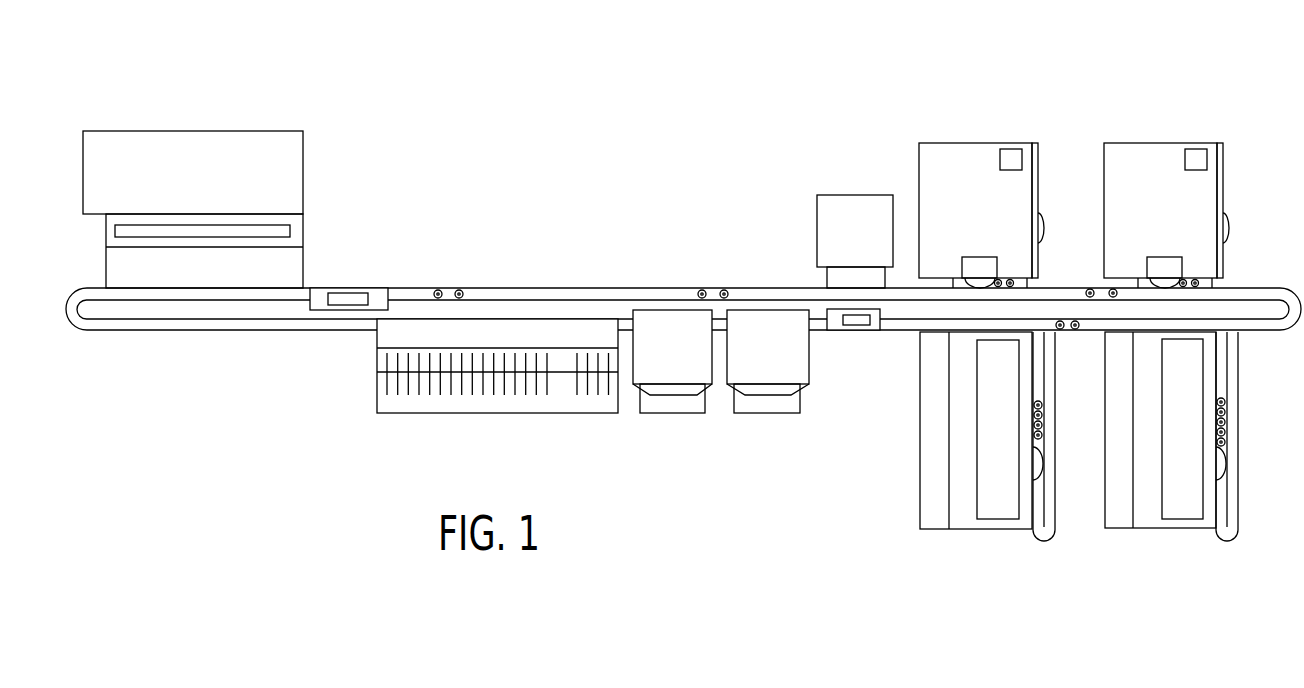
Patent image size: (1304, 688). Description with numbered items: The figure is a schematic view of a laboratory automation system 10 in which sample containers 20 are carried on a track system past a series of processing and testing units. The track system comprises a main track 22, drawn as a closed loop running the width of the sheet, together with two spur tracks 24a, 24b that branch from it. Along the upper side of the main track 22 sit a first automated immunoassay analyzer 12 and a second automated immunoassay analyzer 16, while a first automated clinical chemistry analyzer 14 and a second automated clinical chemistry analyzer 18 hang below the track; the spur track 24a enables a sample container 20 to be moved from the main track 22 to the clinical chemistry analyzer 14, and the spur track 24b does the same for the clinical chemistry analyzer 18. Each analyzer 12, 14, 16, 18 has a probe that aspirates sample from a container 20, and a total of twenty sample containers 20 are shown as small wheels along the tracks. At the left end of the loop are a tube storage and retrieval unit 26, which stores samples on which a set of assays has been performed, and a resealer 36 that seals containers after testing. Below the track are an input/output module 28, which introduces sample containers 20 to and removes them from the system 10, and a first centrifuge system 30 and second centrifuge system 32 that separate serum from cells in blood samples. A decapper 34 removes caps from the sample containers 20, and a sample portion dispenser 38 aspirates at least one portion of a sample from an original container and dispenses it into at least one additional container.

The laboratory automation system 10 is at (948, 42).
The first automated immunoassay analyzer 12 is at (1013, 198).
The first automated clinical chemistry analyzer 14 is at (960, 511).
The second automated immunoassay analyzer 16 is at (1205, 195).
The second automated clinical chemistry analyzer 18 is at (1145, 512).
The sample container 20 is at (459, 290).
The main track 22 is at (287, 325).
The spur track 24a is at (1050, 528).
The spur track 24b is at (1232, 529).
The tube storage and retrieval unit 26 is at (293, 158).
The input/output module 28 is at (387, 403).
The first centrifuge system 30 is at (642, 403).
The second centrifuge system 32 is at (790, 403).
The decapper 34 is at (832, 313).
The resealer 36 is at (378, 295).
The sample portion dispenser 38 is at (828, 228).